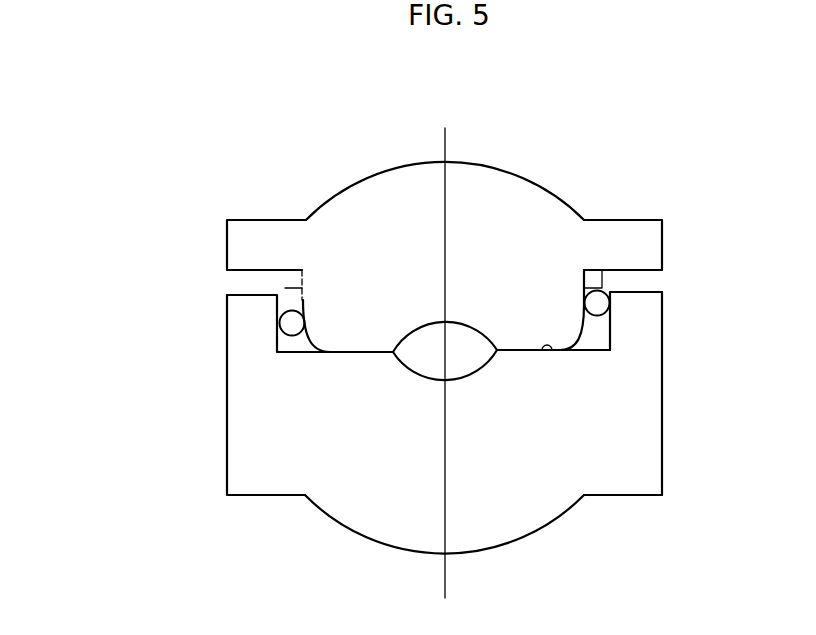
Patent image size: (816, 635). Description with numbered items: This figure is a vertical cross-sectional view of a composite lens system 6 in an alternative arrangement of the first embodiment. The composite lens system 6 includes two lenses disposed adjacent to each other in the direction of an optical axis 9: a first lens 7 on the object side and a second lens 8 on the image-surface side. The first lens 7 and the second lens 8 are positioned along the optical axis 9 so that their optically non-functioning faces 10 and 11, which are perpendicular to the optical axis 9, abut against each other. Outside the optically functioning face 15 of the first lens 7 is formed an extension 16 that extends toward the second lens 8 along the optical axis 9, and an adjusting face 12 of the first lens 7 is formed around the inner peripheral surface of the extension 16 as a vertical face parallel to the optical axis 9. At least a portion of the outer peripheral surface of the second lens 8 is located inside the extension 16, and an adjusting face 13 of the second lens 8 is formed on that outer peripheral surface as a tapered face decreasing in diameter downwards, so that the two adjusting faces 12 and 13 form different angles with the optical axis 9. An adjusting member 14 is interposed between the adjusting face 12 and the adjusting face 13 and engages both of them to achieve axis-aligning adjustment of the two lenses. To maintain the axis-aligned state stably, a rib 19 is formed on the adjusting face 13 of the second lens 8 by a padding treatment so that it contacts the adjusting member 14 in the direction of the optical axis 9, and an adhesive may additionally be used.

The composite lens system 6 is at (122, 133).
The first lens 7 is at (228, 347).
The second lens 8 is at (227, 242).
The optical axis 9 is at (447, 132).
The optically non-functioning face 10 is at (555, 350).
The optically non-functioning face 11 is at (557, 351).
The adjusting face 12 is at (604, 334).
The adjusting face 13 is at (303, 288).
The adjusting member 14 is at (593, 290).
The optically functioning face 15 is at (410, 358).
The extension 16 is at (662, 305).
The rib 19 is at (285, 308).